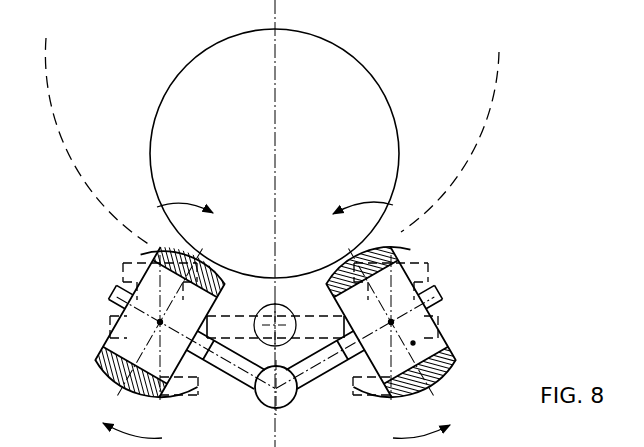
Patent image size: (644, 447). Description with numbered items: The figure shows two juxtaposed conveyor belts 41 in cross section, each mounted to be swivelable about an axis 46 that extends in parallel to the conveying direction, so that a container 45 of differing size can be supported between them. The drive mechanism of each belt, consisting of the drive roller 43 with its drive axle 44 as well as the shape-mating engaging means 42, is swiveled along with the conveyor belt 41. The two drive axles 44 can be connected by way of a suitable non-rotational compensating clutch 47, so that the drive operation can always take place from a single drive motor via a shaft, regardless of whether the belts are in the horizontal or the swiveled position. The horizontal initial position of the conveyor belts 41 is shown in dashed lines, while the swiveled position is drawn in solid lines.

The conveyor belt 41 is at (157, 245).
The shape-mating engaging means 42 is at (105, 358).
The drive roller 43 is at (413, 343).
The drive axle 44 is at (435, 300).
The container 45 is at (155, 118).
The axis 46 is at (157, 320).
The compensating clutch 47 is at (272, 397).